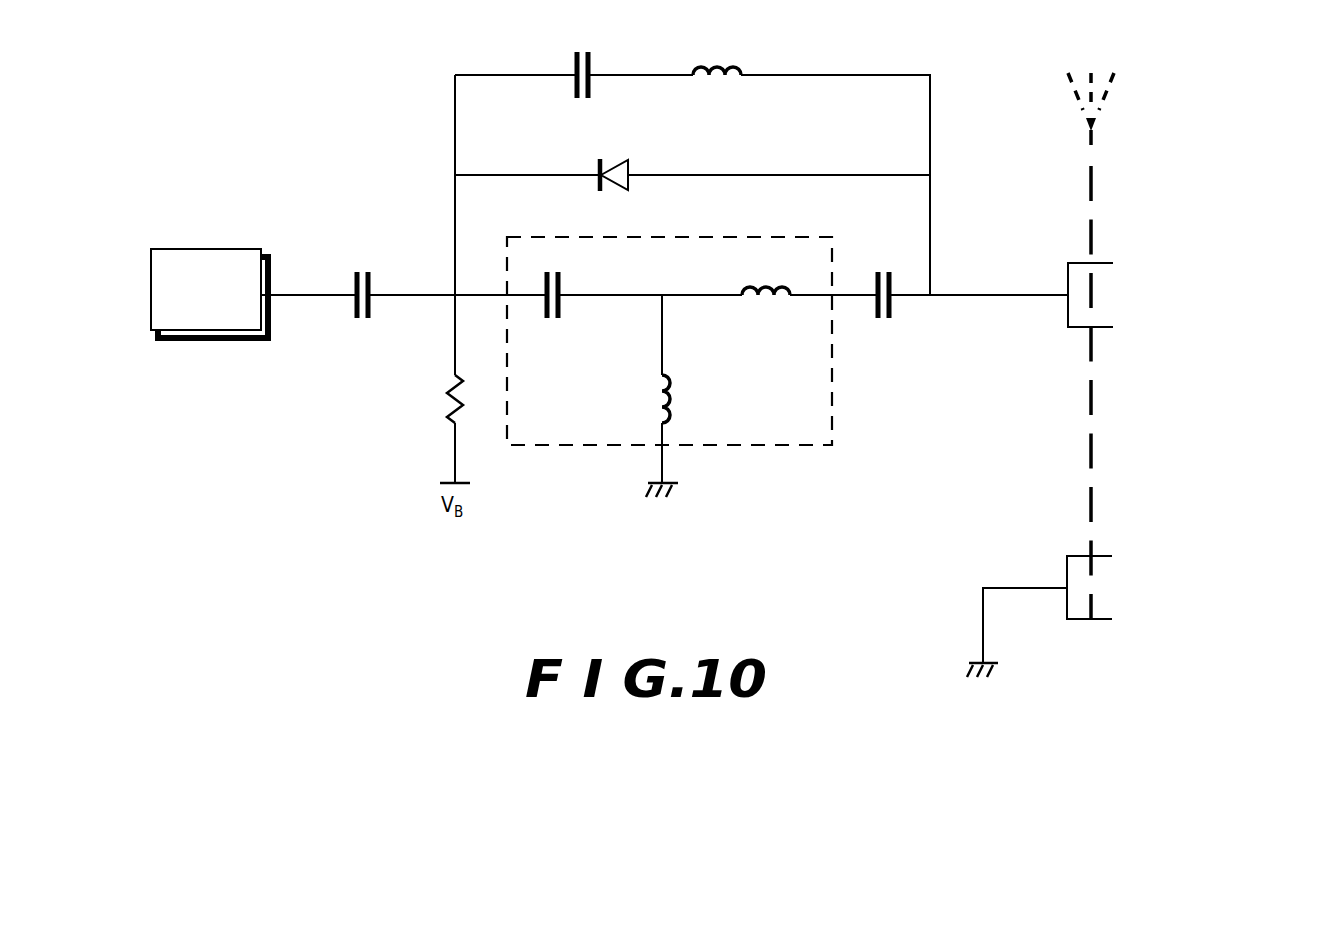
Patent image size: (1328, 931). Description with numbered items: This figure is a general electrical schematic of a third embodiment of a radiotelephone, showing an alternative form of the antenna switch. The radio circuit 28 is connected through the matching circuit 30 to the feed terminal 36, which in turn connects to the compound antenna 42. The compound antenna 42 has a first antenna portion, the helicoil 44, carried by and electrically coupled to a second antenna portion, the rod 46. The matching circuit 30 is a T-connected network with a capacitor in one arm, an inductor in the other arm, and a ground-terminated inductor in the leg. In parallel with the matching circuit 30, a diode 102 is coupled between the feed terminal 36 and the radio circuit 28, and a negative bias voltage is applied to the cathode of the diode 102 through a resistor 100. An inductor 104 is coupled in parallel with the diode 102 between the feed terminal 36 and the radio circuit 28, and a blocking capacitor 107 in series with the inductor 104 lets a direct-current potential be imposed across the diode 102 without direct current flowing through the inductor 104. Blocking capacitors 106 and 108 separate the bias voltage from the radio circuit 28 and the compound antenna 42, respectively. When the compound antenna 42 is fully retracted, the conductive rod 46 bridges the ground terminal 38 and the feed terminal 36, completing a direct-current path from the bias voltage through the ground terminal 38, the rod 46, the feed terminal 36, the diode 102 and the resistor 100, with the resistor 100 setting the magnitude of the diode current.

The radio circuit 28 is at (220, 249).
The matching circuit 30 is at (832, 392).
The feed terminal 36 is at (1068, 318).
The ground terminal 38 is at (1070, 555).
The compound antenna 42 is at (1195, 320).
The helicoil 44 is at (1115, 78).
The rod 46 is at (1091, 410).
The resistor 100 is at (455, 388).
The diode 102 is at (628, 158).
The inductor 104 is at (735, 58).
The blocking capacitor 106 is at (357, 318).
The blocking capacitor 107 is at (588, 55).
The blocking capacitor 108 is at (892, 308).